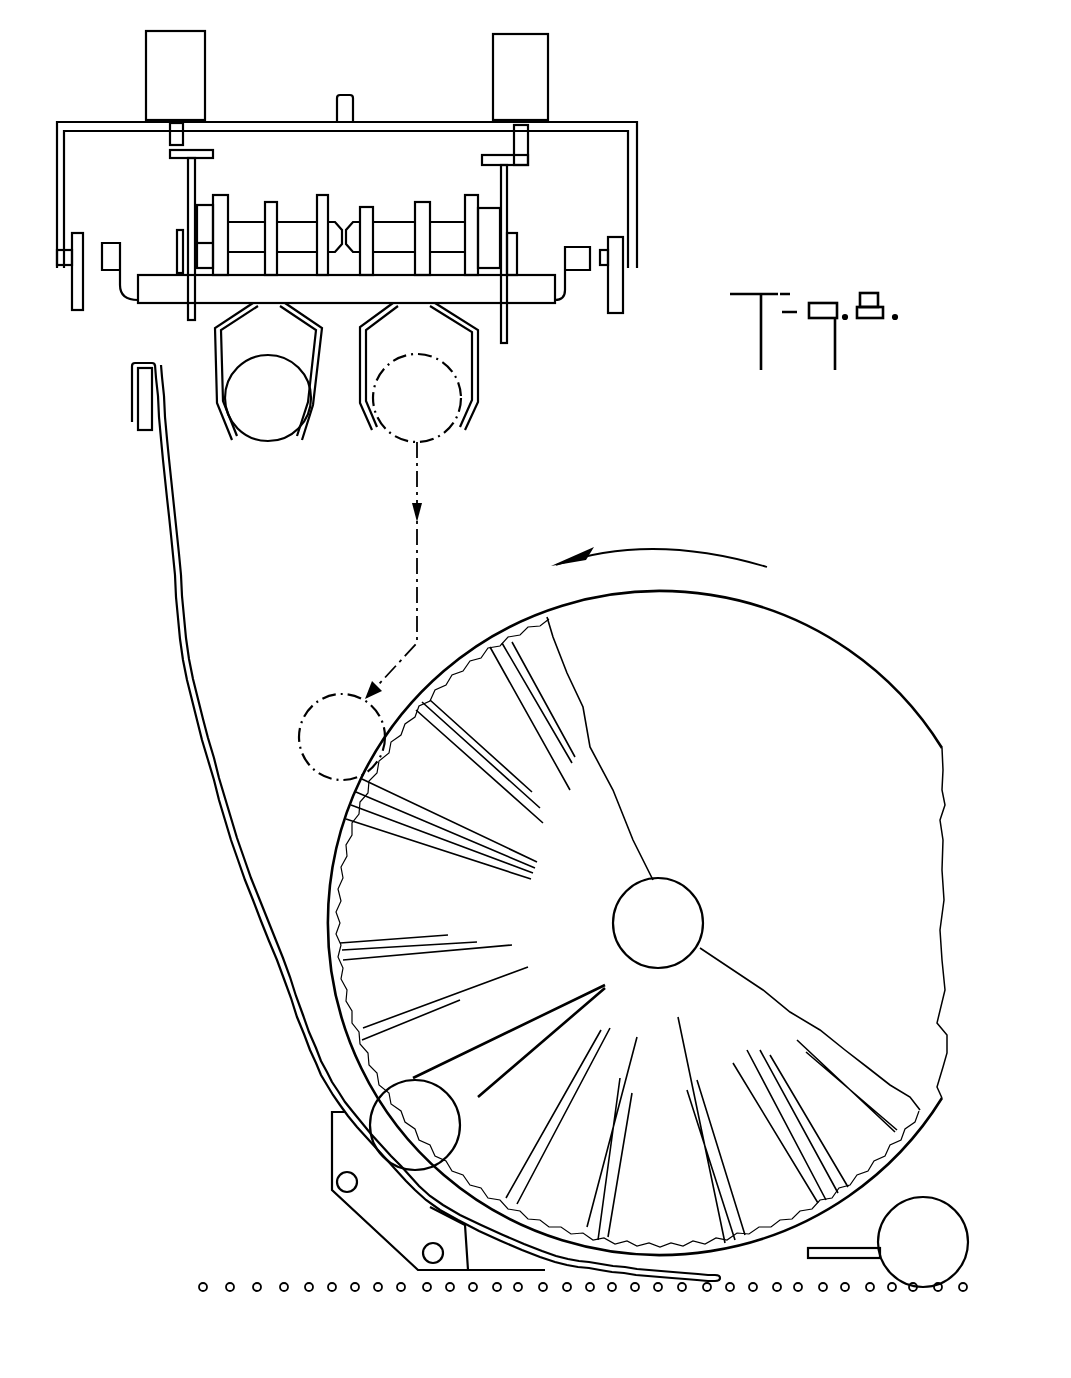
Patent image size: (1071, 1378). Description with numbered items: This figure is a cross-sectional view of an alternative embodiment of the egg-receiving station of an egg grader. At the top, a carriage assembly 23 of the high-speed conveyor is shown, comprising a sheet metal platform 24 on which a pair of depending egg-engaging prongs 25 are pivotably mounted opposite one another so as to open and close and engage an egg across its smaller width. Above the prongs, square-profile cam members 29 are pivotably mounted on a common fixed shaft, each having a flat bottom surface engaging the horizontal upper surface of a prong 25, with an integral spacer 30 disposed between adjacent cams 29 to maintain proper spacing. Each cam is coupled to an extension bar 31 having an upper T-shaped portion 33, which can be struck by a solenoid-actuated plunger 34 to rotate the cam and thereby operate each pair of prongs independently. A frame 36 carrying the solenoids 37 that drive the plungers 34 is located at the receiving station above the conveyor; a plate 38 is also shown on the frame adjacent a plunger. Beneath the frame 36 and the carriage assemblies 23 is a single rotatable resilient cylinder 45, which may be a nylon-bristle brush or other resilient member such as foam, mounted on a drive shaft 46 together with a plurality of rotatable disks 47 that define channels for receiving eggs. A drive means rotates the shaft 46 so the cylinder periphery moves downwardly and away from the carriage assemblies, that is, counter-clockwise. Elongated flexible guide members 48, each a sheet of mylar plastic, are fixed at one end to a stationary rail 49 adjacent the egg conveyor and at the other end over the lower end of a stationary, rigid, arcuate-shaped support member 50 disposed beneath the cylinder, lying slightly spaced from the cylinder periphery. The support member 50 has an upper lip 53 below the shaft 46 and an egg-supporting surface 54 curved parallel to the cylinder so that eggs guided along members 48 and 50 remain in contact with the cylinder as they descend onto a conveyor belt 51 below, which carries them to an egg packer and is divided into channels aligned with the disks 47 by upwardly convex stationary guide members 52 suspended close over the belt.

The carriage assembly 23 is at (492, 422).
The sheet metal platform 24 is at (540, 298).
The egg-engaging prongs 25 is at (522, 375).
The cam members 29 is at (462, 188).
The integral spacer 30 is at (419, 186).
The extension bar 31 is at (540, 212).
The T-shaped portion 33 is at (216, 155).
The solenoid-actuated plunger 34 is at (512, 150).
The frame 36 is at (640, 190).
The solenoids 37 is at (572, 74).
The plate 38 is at (530, 158).
The rotatable resilient cylinder 45 is at (828, 660).
The drive shaft 46 is at (690, 912).
The rotatable disks 47 is at (586, 676).
The elongated flexible guide members 48 is at (176, 551).
The stationary rail 49 is at (137, 432).
The arcuate-shaped support member 50 is at (338, 1155).
The conveyor belt 51 is at (258, 1283).
The elongated stationary guide members 52 is at (843, 1252).
The upper lip 53 is at (325, 1095).
The egg-supporting surface 54 is at (468, 1272).